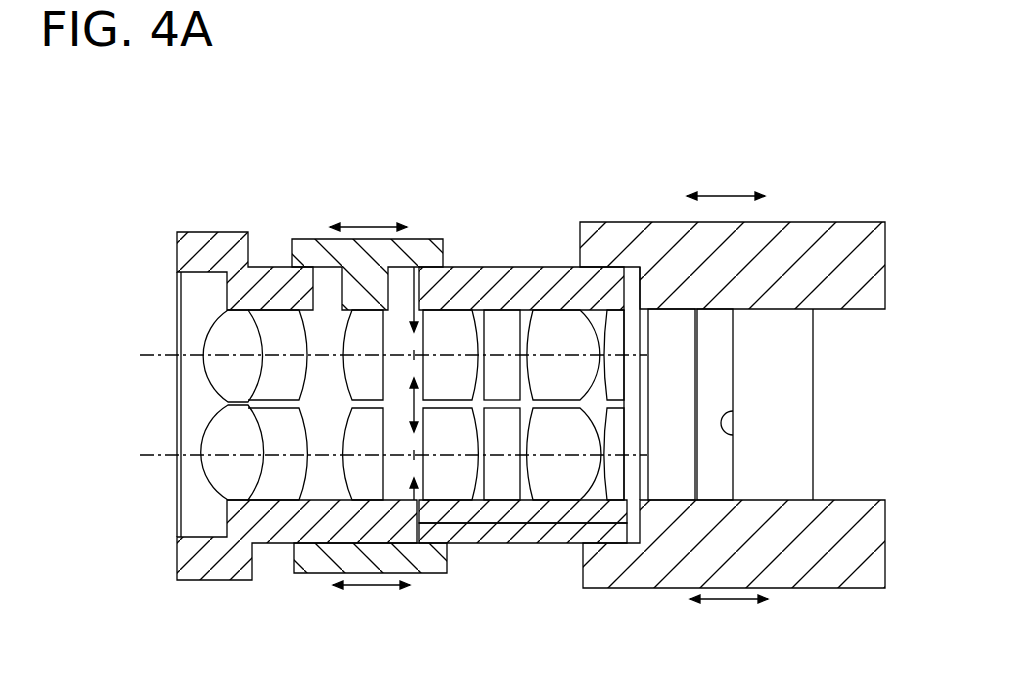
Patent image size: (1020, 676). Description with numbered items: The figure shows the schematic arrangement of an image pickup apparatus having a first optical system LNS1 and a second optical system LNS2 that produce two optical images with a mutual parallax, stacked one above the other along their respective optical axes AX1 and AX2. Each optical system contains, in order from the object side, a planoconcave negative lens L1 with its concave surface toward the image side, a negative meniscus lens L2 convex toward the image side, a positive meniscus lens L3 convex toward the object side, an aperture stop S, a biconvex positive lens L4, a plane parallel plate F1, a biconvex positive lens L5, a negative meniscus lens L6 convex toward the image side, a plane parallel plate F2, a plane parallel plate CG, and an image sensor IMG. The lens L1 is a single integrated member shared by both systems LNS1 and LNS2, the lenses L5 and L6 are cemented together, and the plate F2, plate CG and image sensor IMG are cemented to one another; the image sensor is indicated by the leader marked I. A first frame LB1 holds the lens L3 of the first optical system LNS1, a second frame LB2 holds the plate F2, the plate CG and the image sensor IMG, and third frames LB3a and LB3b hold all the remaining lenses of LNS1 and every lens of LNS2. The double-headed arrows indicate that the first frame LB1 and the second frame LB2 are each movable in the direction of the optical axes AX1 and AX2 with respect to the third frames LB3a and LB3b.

The first optical system LNS1 is at (160, 283).
The second optical system LNS2 is at (160, 490).
The optical axis AX1 is at (155, 355).
The optical axis AX2 is at (155, 455).
The planoconcave negative lens L1 is at (193, 293).
The negative meniscus lens L2 is at (273, 323).
The positive meniscus lens L3 is at (368, 327).
The biconvex positive lens L4 is at (448, 327).
The biconvex positive lens L5 is at (555, 327).
The negative meniscus lens L6 is at (607, 325).
The aperture stop S is at (414, 267).
The plane parallel plate F1 is at (500, 327).
The plane parallel plate F2 is at (672, 325).
The plane parallel plate CG is at (713, 325).
The image sensor IMG is at (778, 367).
The image sensor I is at (733, 435).
The first frame LB1 is at (425, 239).
The second frame LB2 is at (818, 220).
The third frame LB3a is at (225, 292).
The third frame LB3b is at (530, 300).